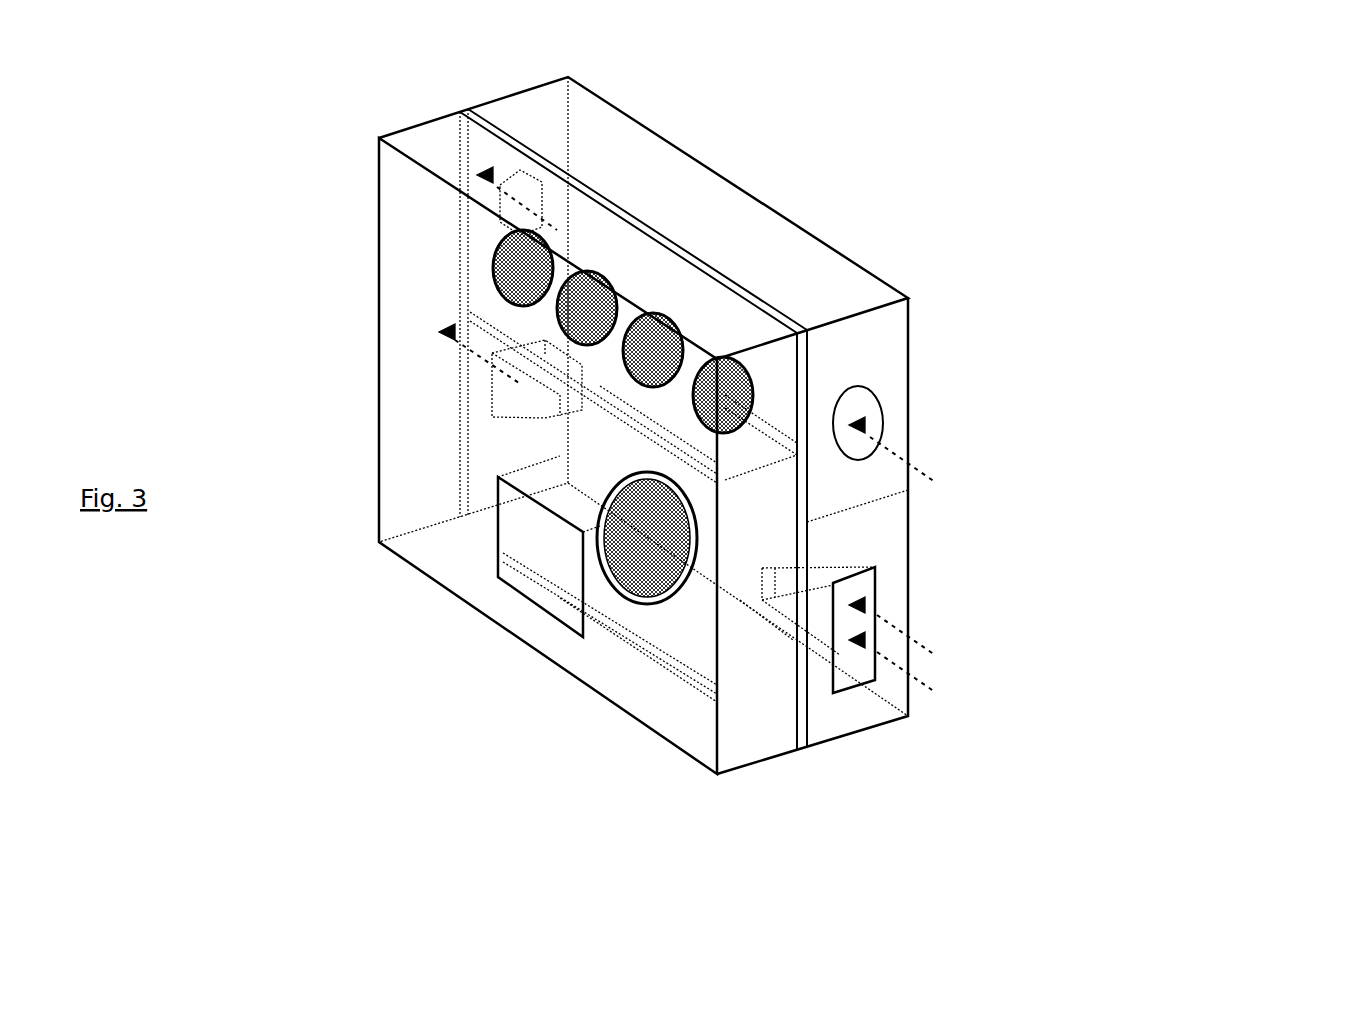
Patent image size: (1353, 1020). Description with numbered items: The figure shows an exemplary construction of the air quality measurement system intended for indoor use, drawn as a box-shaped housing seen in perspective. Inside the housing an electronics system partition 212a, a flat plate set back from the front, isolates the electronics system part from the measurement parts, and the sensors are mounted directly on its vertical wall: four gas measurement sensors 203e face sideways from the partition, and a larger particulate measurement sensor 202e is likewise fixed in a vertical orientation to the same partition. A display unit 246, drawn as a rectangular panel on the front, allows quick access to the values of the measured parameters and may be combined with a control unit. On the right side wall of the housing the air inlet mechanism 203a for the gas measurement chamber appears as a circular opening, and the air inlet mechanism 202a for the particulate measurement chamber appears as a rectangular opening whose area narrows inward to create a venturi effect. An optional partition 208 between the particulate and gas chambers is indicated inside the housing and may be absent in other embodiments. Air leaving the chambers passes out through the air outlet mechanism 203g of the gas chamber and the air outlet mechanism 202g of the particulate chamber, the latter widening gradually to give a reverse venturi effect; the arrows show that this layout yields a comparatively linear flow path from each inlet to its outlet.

The air outlet mechanism 203g is at (533, 183).
The air outlet mechanism 202g is at (510, 393).
The electronics system partition 212a is at (670, 244).
The gas measurement sensor 203e is at (735, 386).
The air inlet mechanism 203a is at (872, 414).
The air inlet mechanism 202a is at (872, 583).
The partition 208 is at (872, 515).
The display unit 246 is at (516, 583).
The particulate measurement sensor 202e is at (655, 584).